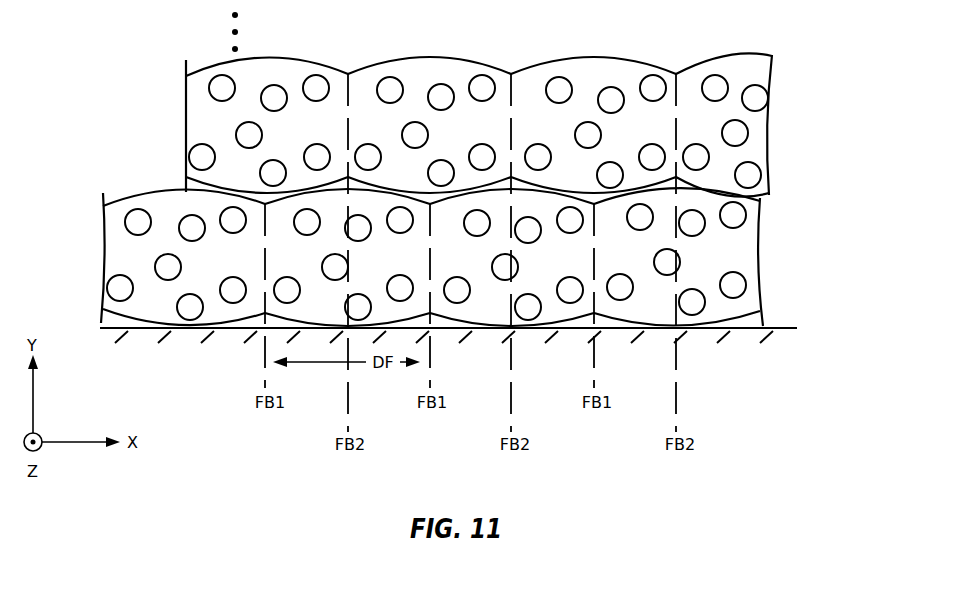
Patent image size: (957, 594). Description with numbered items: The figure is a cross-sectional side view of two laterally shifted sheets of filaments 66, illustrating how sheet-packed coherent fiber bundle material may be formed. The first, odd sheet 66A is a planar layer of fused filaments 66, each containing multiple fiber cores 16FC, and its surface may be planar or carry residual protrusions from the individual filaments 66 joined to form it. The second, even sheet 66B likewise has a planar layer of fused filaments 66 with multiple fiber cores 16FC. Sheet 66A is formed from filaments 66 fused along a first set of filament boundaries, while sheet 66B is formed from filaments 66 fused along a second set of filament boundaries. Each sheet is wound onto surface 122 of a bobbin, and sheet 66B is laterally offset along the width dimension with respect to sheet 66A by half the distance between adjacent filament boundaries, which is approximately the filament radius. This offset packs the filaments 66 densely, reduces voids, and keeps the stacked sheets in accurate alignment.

The filaments 66 is at (499, 202).
The odd sheet 66A is at (847, 202).
The even sheet 66B is at (847, 62).
The fiber cores 16FC is at (748, 131).
The surface 122 is at (787, 326).